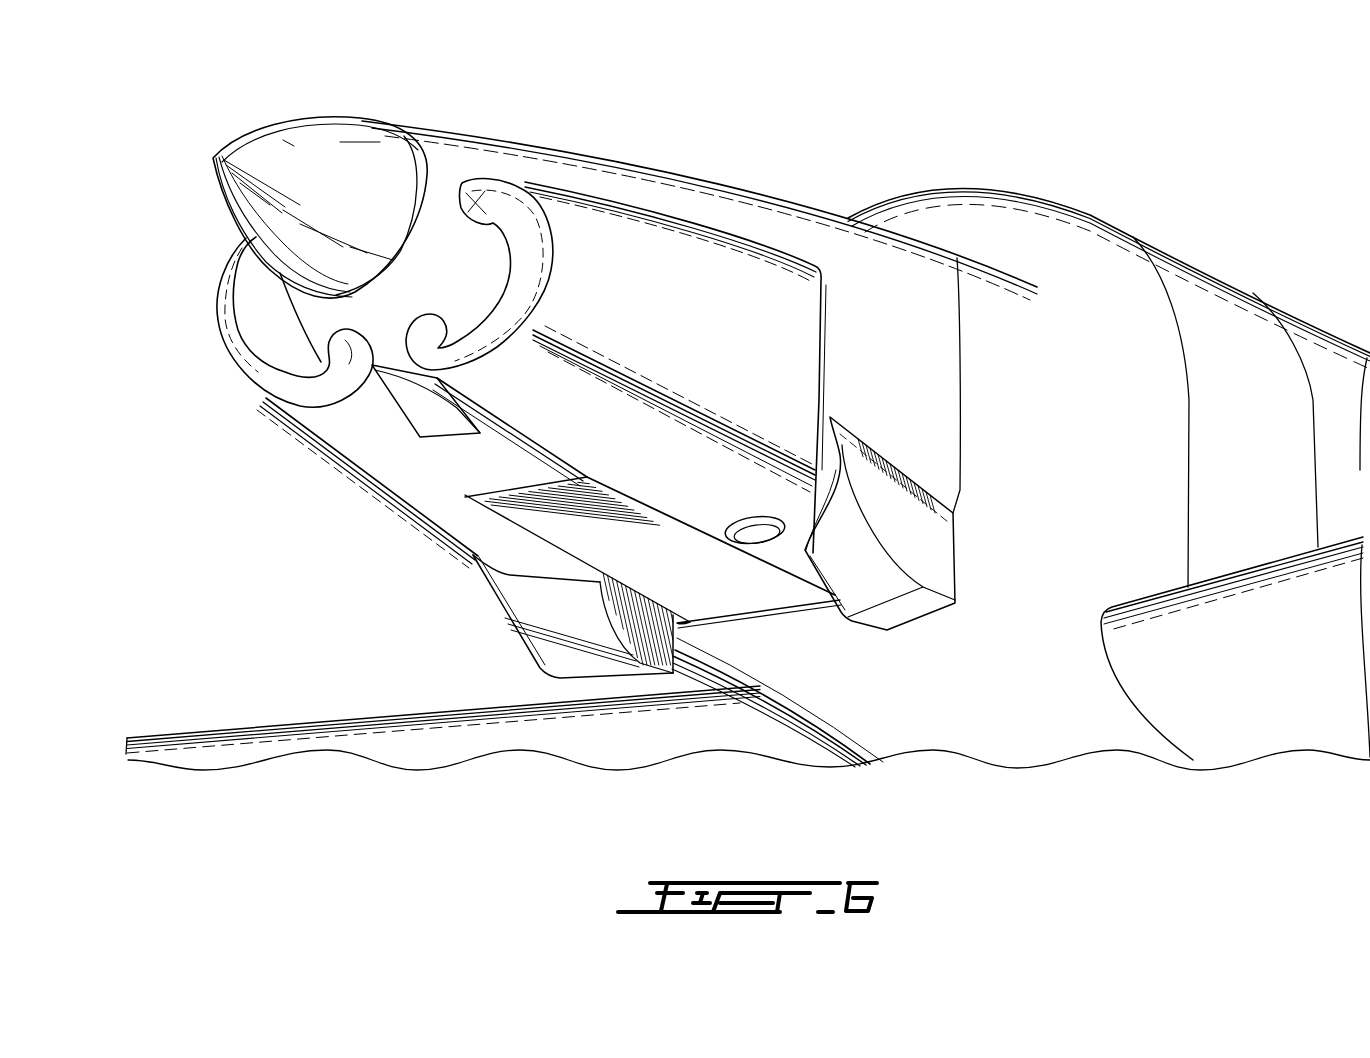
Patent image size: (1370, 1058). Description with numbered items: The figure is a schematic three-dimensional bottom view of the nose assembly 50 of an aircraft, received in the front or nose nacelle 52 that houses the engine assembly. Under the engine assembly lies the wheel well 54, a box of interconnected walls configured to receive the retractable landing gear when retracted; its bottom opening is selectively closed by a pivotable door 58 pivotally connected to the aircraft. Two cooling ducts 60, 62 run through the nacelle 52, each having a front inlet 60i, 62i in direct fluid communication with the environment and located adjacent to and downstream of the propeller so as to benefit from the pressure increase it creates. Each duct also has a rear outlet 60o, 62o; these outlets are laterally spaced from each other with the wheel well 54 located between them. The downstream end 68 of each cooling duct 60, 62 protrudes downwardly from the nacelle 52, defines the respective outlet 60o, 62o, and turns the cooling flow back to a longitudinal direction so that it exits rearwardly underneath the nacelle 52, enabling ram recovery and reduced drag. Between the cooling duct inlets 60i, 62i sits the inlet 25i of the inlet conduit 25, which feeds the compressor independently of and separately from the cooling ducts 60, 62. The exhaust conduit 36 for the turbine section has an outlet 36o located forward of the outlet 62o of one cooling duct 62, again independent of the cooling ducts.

The assembly 50 is at (600, 142).
The nacelle 52 is at (760, 210).
The wheel well 54 is at (731, 612).
The pivotable door 58 is at (717, 685).
The exhaust conduit 36 is at (750, 522).
The outlet 36o is at (806, 547).
The cooling duct 60 is at (553, 617).
The cooling duct 62 is at (868, 600).
The downstream end 68 is at (705, 630).
The front inlet 60i is at (263, 315).
The front inlet 62i is at (470, 182).
The rear outlet 60o is at (677, 592).
The rear outlet 62o is at (923, 618).
The inlet conduit 25 is at (450, 435).
The inlet 25i is at (423, 412).